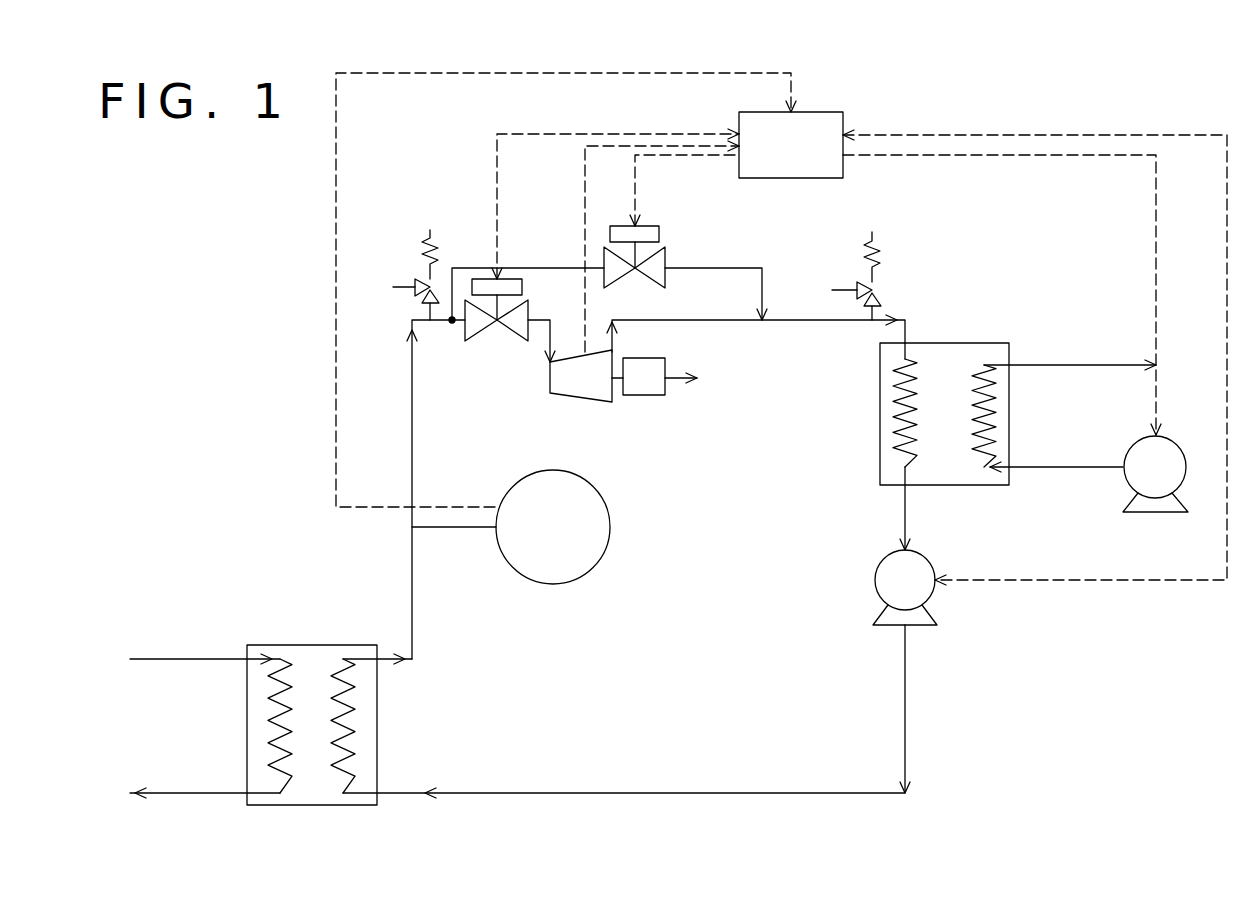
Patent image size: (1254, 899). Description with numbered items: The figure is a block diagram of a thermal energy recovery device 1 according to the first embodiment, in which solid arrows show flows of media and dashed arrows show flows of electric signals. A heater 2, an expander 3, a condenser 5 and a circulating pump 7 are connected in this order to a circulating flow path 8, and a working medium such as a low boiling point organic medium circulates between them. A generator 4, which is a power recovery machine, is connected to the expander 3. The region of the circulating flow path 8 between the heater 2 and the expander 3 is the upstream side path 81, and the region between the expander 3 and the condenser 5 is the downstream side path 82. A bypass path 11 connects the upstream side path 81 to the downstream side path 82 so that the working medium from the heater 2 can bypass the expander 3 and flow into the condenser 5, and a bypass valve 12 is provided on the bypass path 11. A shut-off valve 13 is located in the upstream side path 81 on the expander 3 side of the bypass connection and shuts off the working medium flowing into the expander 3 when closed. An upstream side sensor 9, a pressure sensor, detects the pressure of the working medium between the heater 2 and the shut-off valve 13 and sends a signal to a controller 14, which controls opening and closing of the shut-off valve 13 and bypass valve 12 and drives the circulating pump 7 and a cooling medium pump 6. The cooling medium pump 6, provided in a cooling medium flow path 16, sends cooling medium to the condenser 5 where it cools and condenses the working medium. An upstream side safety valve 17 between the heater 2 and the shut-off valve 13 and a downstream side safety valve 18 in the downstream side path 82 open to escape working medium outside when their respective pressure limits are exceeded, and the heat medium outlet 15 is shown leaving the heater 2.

The thermal energy recovery device 1 is at (980, 108).
The heater 2 is at (378, 726).
The expander 3 is at (588, 402).
The generator 4 is at (646, 396).
The condenser 5 is at (964, 487).
The cooling medium pump 6 is at (1182, 488).
The circulating pump 7 is at (873, 592).
The circulating flow path 8 is at (805, 793).
The upstream side sensor 9 is at (610, 541).
The bypass path 11 is at (550, 268).
The bypass valve 12 is at (620, 277).
The shut-off valve 13 is at (464, 343).
The controller 14 is at (818, 112).
The heat medium outlet pipe 15 is at (180, 793).
The cooling medium flow path 16 is at (1069, 468).
The upstream side safety valve 17 is at (426, 282).
The downstream side safety valve 18 is at (863, 282).
The upstream side path 81 is at (413, 436).
The downstream side path 82 is at (818, 323).